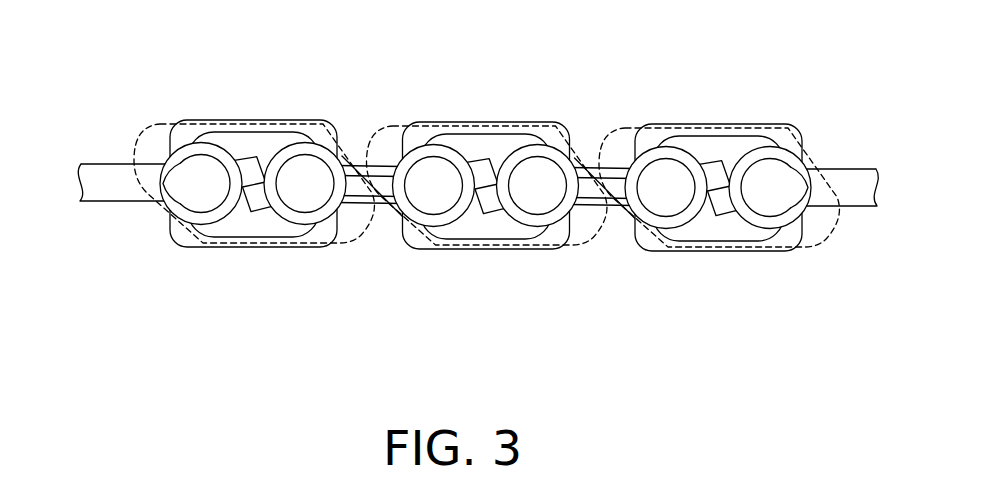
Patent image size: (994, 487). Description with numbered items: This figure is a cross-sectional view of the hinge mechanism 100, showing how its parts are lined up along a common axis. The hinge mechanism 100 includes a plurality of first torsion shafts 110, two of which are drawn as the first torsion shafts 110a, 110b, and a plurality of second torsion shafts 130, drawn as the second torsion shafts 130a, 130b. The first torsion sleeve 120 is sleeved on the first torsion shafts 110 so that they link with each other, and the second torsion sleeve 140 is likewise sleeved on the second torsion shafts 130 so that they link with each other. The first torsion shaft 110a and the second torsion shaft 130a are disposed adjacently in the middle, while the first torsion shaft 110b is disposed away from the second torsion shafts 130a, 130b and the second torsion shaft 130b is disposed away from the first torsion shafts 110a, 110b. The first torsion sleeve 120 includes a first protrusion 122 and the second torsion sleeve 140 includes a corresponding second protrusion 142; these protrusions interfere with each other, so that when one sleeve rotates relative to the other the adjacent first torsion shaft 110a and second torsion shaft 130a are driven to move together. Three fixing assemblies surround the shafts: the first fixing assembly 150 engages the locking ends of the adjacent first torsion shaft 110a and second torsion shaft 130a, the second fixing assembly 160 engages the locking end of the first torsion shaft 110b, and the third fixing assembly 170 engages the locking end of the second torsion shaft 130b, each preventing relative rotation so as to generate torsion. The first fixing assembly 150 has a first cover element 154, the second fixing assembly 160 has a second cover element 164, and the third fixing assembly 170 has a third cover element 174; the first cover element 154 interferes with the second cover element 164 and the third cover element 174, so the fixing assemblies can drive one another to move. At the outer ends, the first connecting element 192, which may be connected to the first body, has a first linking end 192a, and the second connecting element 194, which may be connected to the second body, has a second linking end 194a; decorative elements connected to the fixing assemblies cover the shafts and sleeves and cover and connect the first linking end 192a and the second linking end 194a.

The hinge mechanism 100 is at (481, 217).
The first torsion shafts 110 is at (602, 123).
The first torsion shaft 110a is at (538, 181).
The first torsion shaft 110b is at (652, 184).
The first torsion sleeve 120 is at (718, 166).
The first protrusion 122 is at (497, 203).
The second torsion shafts 130 is at (369, 122).
The second torsion shaft 130a is at (424, 178).
The second torsion shaft 130b is at (308, 182).
The second torsion sleeve 140 is at (486, 166).
The second protrusion 142 is at (489, 166).
The first fixing assembly 150 is at (487, 240).
The first cover element 154 is at (425, 239).
The second fixing assembly 160 is at (719, 241).
The second cover element 164 is at (655, 241).
The third fixing assembly 170 is at (254, 239).
The third cover element 174 is at (195, 237).
The first connecting element 192 is at (855, 187).
The first linking end 192a is at (775, 153).
The second connecting element 194 is at (115, 178).
The second linking end 194a is at (200, 152).